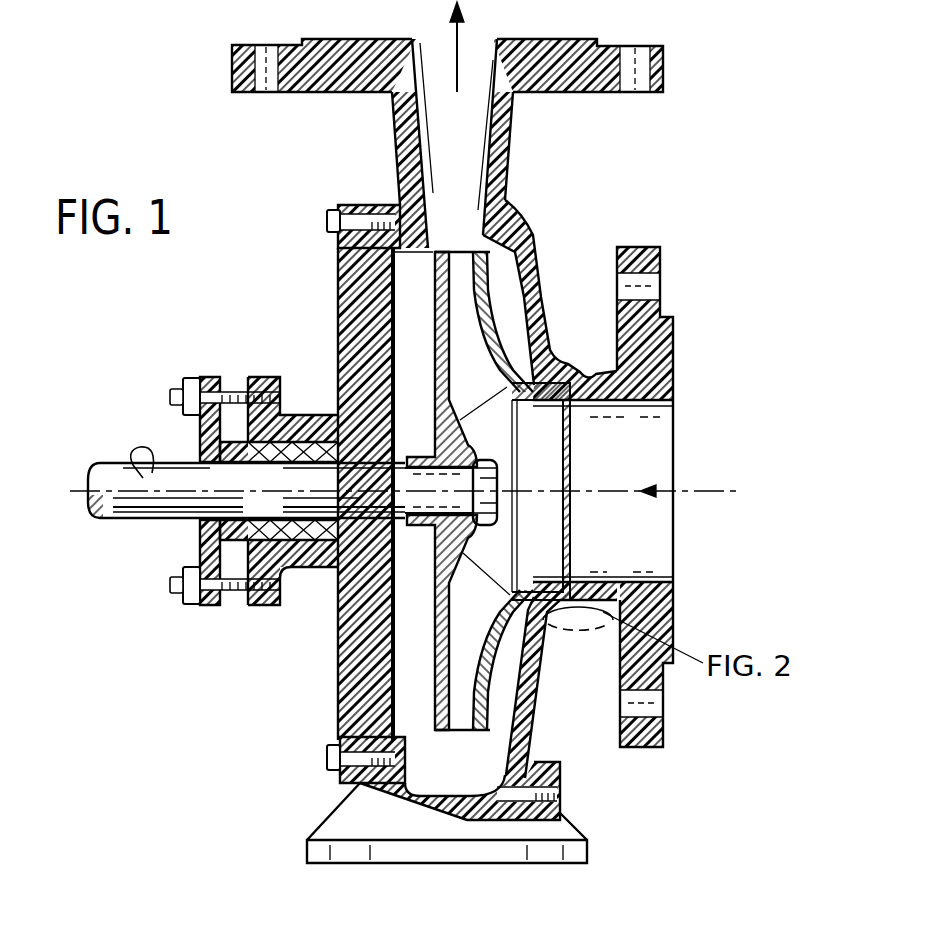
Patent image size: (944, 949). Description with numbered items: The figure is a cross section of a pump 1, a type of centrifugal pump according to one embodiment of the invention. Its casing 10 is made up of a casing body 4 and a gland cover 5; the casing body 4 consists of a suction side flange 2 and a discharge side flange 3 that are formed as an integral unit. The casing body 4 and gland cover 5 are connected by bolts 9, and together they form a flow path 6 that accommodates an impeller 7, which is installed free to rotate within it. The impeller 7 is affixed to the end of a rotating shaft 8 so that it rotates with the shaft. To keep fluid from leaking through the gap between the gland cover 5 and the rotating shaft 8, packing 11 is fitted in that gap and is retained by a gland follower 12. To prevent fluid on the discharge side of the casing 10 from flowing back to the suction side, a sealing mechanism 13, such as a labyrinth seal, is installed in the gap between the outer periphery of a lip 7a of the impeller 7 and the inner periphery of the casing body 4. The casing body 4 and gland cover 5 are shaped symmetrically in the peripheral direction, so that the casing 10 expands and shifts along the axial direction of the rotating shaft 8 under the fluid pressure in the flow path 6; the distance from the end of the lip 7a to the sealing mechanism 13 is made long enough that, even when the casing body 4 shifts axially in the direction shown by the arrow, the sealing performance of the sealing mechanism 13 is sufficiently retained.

The pump 1 is at (738, 128).
The suction side flange 2 is at (660, 343).
The discharge side flange 3 is at (665, 53).
The casing body 4 is at (533, 287).
The gland cover 5 is at (337, 338).
The flow path 6 is at (443, 763).
The impeller 7 is at (500, 334).
The lip 7a is at (542, 558).
The rotating shaft 8 is at (123, 510).
The bolts 9 is at (330, 227).
The casing 10 is at (398, 142).
The packing 11 is at (323, 545).
The gland follower 12 is at (207, 537).
The sealing mechanism 13 is at (540, 557).